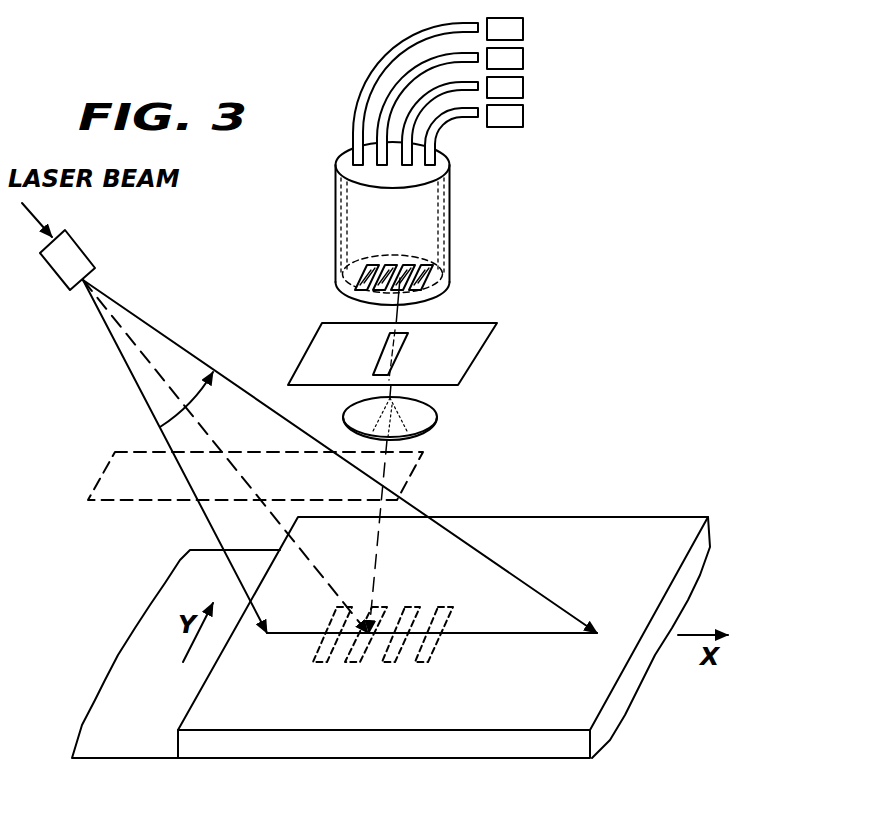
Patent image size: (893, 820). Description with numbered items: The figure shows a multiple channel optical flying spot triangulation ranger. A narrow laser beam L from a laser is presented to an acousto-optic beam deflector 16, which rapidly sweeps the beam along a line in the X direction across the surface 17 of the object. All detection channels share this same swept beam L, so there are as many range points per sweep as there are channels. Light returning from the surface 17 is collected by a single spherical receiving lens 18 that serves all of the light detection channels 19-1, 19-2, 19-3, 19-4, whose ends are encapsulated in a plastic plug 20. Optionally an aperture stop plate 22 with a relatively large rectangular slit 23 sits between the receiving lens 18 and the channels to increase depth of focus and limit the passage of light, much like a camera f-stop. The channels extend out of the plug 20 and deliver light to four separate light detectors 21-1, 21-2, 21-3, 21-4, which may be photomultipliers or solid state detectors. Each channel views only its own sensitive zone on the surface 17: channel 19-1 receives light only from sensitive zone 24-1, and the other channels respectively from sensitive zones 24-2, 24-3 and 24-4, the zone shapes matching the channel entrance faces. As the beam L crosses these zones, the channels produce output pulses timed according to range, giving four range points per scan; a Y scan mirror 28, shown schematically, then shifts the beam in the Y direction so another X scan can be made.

The acousto-optic beam deflector 16 is at (133, 262).
The surface 17 is at (148, 617).
The spherical receiving lens 18 is at (437, 415).
The light detection channel 19-1 is at (432, 268).
The light detection channel 19-2 is at (420, 260).
The light detection channel 19-3 is at (390, 258).
The light detection channel 19-4 is at (357, 277).
The plastic plug 20 is at (335, 228).
The light detector 21-1 is at (523, 117).
The light detector 21-2 is at (523, 88).
The light detector 21-3 is at (523, 59).
The light detector 21-4 is at (523, 30).
The aperture stop plate 22 is at (478, 357).
The rectangular slit 23 is at (407, 342).
The sensitive zone 24-1 is at (323, 643).
The sensitive zone 24-2 is at (353, 657).
The sensitive zone 24-3 is at (388, 660).
The sensitive zone 24-4 is at (437, 643).
The Y scan mirror 28 is at (407, 482).
The laser beam L is at (138, 392).